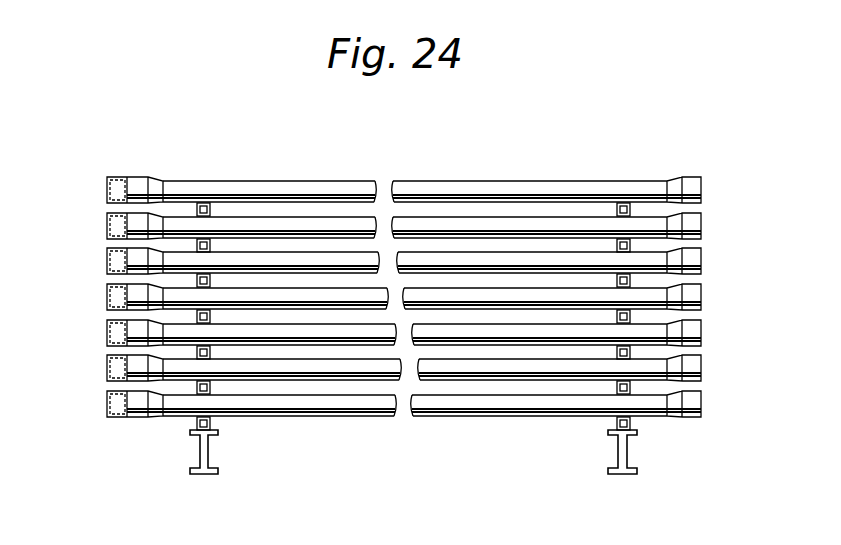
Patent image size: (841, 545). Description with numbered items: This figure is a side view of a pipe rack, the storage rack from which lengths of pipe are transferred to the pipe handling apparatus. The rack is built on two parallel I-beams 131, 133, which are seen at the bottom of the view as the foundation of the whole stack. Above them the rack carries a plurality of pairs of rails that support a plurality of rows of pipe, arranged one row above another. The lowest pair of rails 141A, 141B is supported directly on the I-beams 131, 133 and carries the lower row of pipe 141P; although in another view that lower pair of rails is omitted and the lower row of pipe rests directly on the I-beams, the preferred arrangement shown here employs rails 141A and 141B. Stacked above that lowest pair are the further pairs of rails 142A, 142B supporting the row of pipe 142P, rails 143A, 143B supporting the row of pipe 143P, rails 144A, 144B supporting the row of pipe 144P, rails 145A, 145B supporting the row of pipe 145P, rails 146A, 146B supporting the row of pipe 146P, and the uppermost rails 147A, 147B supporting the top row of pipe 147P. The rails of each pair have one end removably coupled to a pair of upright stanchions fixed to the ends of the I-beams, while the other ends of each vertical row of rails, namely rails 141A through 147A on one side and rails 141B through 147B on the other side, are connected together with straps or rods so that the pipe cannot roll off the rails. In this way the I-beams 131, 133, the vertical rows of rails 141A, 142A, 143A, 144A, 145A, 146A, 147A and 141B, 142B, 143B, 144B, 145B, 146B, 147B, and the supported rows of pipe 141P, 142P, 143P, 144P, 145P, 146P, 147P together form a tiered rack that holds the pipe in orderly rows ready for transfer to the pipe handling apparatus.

The I-beam 131 is at (215, 474).
The I-beam 133 is at (618, 474).
The rail 141A is at (196, 422).
The rail 141B is at (616, 422).
The row of pipe 141P is at (345, 400).
The rail 142A is at (196, 384).
The rail 142B is at (632, 383).
The row of pipe 142P is at (282, 368).
The rail 143A is at (195, 348).
The rail 143B is at (632, 348).
The row of pipe 143P is at (447, 333).
The rail 144A is at (195, 312).
The rail 144B is at (632, 312).
The row of pipe 144P is at (543, 293).
The rail 145A is at (195, 276).
The rail 145B is at (632, 276).
The row of pipe 145P is at (440, 258).
The rail 146A is at (195, 241).
The rail 146B is at (632, 241).
The row of pipe 146P is at (497, 226).
The rail 147A is at (195, 205).
The rail 147B is at (632, 205).
The row of pipe 147P is at (563, 188).